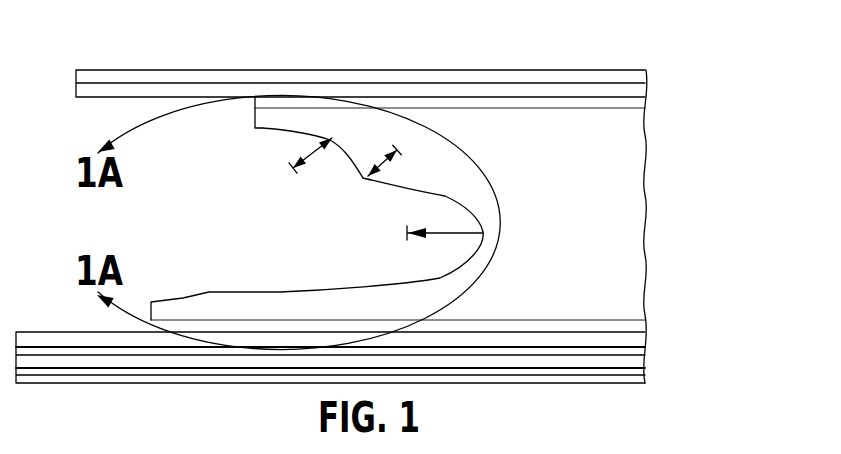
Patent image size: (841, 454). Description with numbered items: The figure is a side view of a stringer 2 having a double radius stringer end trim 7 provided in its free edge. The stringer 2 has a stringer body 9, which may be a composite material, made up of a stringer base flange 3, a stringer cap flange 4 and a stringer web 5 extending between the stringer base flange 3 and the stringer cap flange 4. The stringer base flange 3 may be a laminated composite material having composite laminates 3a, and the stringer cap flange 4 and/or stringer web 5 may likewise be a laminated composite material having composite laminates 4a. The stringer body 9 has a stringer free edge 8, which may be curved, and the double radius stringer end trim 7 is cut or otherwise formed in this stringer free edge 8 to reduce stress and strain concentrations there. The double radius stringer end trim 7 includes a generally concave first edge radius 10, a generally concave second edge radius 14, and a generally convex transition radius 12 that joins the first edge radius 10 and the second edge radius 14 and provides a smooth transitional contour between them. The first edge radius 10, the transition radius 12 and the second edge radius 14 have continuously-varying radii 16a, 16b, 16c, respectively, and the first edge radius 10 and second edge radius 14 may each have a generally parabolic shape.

The stringer 2 is at (389, 70).
The stringer base flange 3 is at (115, 92).
The composite laminates 3a is at (637, 77).
The stringer cap flange 4 is at (58, 332).
The composite laminates 4a is at (632, 352).
The stringer web 5 is at (616, 252).
The double radius stringer end trim 7 is at (345, 208).
The stringer free edge 8 is at (255, 113).
The stringer body 9 is at (218, 60).
The first edge radius 10 is at (264, 129).
The transition radius 12 is at (363, 178).
The second edge radius 14 is at (442, 196).
The continuously-varying radius 16a is at (316, 152).
The continuously-varying radius 16b is at (372, 172).
The continuously-varying radius 16c is at (445, 236).